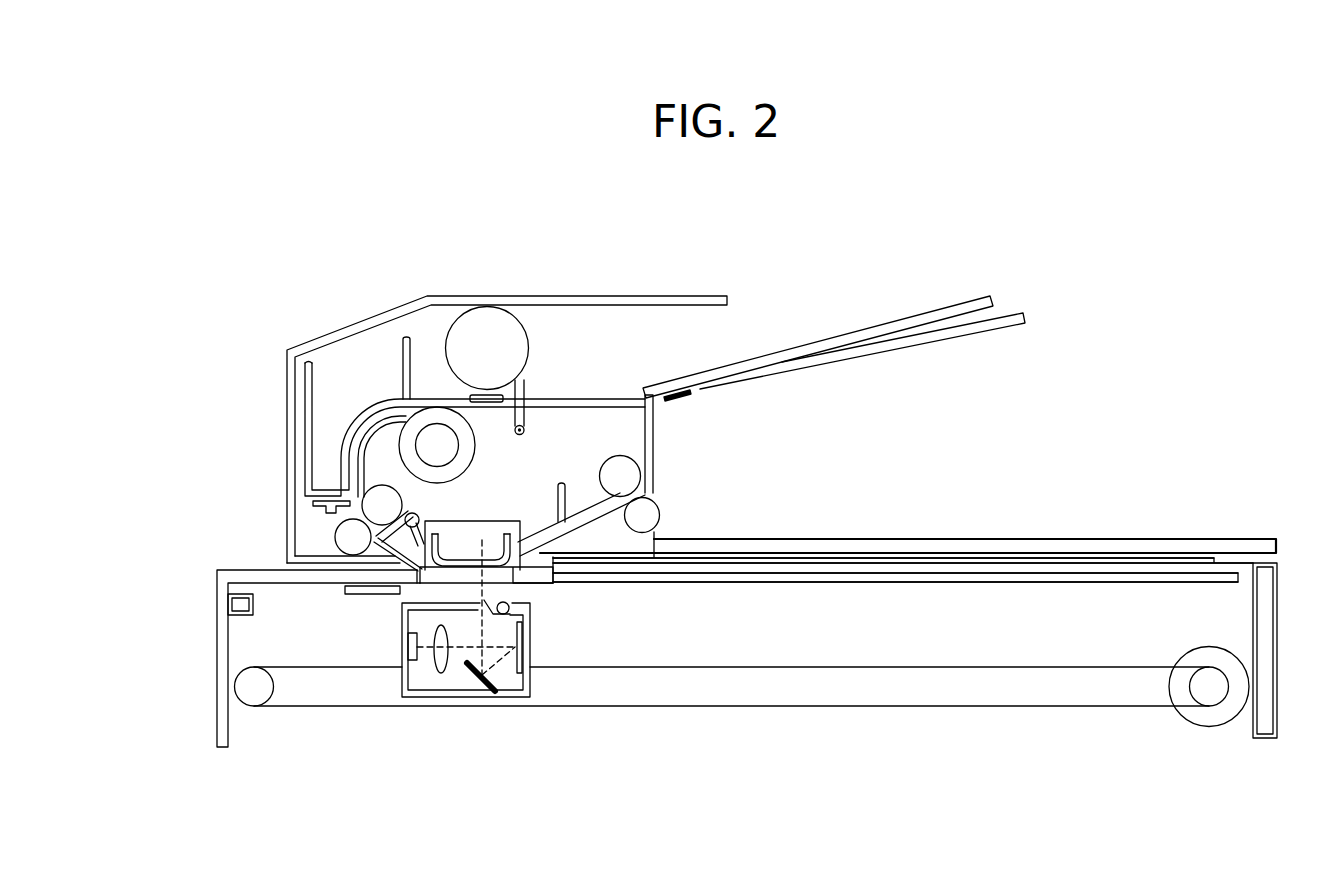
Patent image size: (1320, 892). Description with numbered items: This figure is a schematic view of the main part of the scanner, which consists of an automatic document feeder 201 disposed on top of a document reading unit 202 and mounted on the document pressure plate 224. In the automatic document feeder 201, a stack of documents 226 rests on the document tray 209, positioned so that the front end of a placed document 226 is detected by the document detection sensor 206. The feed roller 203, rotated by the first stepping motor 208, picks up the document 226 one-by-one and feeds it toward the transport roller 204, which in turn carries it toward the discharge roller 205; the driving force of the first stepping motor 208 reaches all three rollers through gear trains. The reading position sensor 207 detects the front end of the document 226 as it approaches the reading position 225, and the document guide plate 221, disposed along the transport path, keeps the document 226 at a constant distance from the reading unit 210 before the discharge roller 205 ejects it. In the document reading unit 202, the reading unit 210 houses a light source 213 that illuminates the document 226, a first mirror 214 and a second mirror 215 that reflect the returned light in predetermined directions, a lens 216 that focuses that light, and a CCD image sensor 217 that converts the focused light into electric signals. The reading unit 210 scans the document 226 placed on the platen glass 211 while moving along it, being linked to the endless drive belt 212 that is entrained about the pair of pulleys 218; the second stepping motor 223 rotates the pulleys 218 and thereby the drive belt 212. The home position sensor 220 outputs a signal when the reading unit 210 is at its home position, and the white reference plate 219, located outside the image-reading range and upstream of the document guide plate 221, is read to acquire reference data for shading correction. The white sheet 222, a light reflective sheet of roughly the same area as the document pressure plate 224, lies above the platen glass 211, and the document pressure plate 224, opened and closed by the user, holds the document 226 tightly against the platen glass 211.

The automatic document feeder 201 is at (138, 303).
The document reading unit 202 is at (138, 570).
The feed roller 203 is at (485, 322).
The transport roller 204 is at (345, 532).
The discharge roller 205 is at (632, 472).
The document detection sensor 206 is at (527, 392).
The reading position sensor 207 is at (417, 512).
The first stepping motor 208 is at (403, 428).
The document tray 209 is at (890, 335).
The reading unit 210 is at (530, 683).
The platen glass 211 is at (860, 586).
The drive belt 212 is at (1032, 710).
The light source 213 is at (512, 606).
The first mirror 214 is at (482, 697).
The second mirror 215 is at (525, 648).
The lens 216 is at (433, 665).
The CCD image sensor 217 is at (400, 652).
The pulleys 218 is at (246, 690).
The white reference plate 219 is at (347, 593).
The home position sensor 220 is at (228, 607).
The document guide plate 221 is at (497, 527).
The white sheet 222 is at (898, 550).
The second stepping motor 223 is at (1210, 717).
The document pressure plate 224 is at (806, 542).
The reading position 225 is at (428, 582).
The document 226 is at (957, 305).